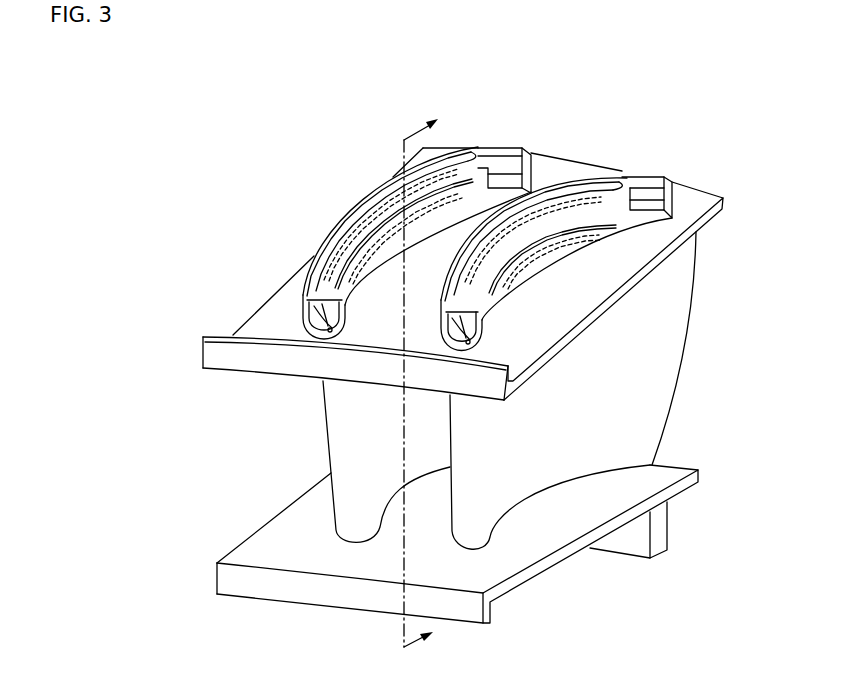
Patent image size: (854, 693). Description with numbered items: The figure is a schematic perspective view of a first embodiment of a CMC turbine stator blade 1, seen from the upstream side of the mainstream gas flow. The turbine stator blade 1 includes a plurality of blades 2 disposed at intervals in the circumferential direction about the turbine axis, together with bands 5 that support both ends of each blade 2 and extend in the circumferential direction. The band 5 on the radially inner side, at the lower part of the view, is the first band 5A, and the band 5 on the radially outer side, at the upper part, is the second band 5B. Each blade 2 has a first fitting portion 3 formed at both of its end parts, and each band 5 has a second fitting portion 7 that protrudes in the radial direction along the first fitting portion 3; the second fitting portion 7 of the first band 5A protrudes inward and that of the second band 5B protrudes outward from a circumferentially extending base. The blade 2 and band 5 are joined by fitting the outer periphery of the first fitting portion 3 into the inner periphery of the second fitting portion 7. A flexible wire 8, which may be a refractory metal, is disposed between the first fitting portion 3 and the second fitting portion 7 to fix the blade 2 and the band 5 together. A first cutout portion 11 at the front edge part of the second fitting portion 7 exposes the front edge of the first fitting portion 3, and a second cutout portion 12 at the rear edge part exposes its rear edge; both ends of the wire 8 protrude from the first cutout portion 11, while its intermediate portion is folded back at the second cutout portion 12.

The turbine stator blade 1 is at (447, 389).
The blade 2 is at (343, 440).
The first fitting portion 3 is at (484, 232).
The band 5 is at (440, 385).
The first band 5A is at (275, 555).
The second band 5B is at (270, 330).
The second fitting portion 7 is at (313, 257).
The flexible wire 8 is at (363, 223).
The first cutout portion 11 is at (358, 294).
The second cutout portion 12 is at (511, 155).